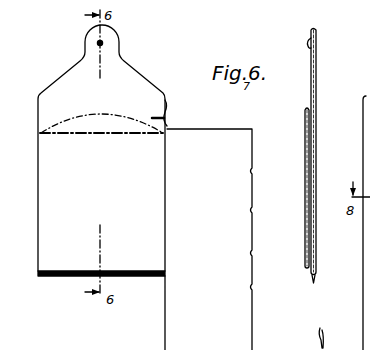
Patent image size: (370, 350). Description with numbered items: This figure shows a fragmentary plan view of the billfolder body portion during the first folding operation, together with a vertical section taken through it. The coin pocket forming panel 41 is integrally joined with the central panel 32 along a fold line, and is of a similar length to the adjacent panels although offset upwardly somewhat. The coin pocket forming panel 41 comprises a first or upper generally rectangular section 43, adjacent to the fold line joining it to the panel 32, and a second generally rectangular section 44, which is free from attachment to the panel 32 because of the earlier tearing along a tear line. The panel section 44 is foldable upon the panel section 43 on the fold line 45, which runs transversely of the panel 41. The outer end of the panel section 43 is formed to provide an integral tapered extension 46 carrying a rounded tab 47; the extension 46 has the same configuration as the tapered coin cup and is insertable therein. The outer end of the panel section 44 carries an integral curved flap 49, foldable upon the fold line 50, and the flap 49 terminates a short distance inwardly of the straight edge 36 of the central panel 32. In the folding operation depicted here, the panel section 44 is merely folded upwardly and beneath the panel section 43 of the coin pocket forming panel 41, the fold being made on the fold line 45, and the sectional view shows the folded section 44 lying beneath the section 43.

In FIG. 5, the panel 32 is at (218, 301).
In FIG. 6, the straight edge 36 is at (360, 210).
In FIG. 5, the coin pocket forming panel 41 is at (50, 187).
In FIG. 6, the coin pocket forming panel 41 is at (318, 135).
In FIG. 5, the first or upper generally rectangular section 43 is at (88, 213).
In FIG. 6, the first or upper generally rectangular section 43 is at (317, 173).
In FIG. 5, the second generally rectangular section 44 is at (66, 239).
In FIG. 6, the second generally rectangular section 44 is at (309, 190).
In FIG. 5, the fold line 45 is at (88, 278).
In FIG. 6, the fold line 45 is at (306, 286).
In FIG. 5, the tapered extension 46 is at (125, 86).
In FIG. 6, the tapered extension 46 is at (312, 78).
In FIG. 5, the rounded tab 47 is at (106, 43).
In FIG. 6, the rounded tab 47 is at (311, 35).
In FIG. 5, the curved flap 49 is at (126, 120).
In FIG. 6, the curved flap 49 is at (305, 113).
In FIG. 6, the fold line 50 is at (305, 134).